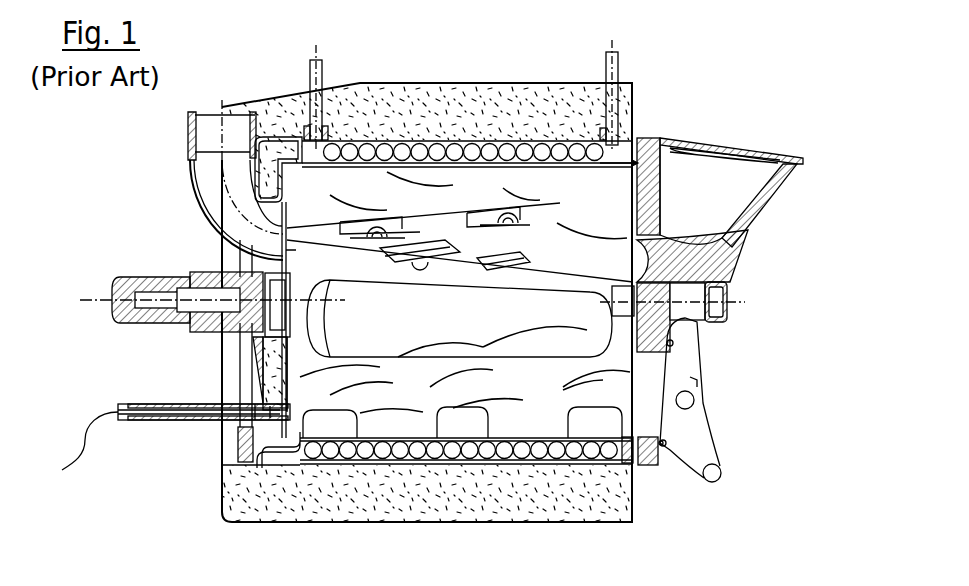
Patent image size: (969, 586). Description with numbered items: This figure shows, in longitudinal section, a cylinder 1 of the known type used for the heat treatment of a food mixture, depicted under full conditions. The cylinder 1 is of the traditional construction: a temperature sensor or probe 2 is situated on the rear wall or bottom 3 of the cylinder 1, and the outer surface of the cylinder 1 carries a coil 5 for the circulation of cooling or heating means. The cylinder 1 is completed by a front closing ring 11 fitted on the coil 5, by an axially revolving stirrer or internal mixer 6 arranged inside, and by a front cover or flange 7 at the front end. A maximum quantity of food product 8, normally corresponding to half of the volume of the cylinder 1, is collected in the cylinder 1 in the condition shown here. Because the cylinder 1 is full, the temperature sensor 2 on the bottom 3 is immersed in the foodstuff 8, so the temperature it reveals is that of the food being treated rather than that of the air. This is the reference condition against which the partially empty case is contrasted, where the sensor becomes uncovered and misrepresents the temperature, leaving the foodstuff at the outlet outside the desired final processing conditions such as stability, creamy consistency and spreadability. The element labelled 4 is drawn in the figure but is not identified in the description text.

The cylinder 1 is at (698, 98).
The temperature sensor or probe 2 is at (298, 417).
The rear wall or bottom 3 is at (282, 378).
The hand lever 4 is at (573, 442).
The coil 5 is at (463, 150).
The axially revolving stirrer or internal mixer 6 is at (592, 217).
The front cover or flange 7 is at (650, 450).
The food product 8 is at (522, 347).
The front closing ring 11 is at (595, 463).